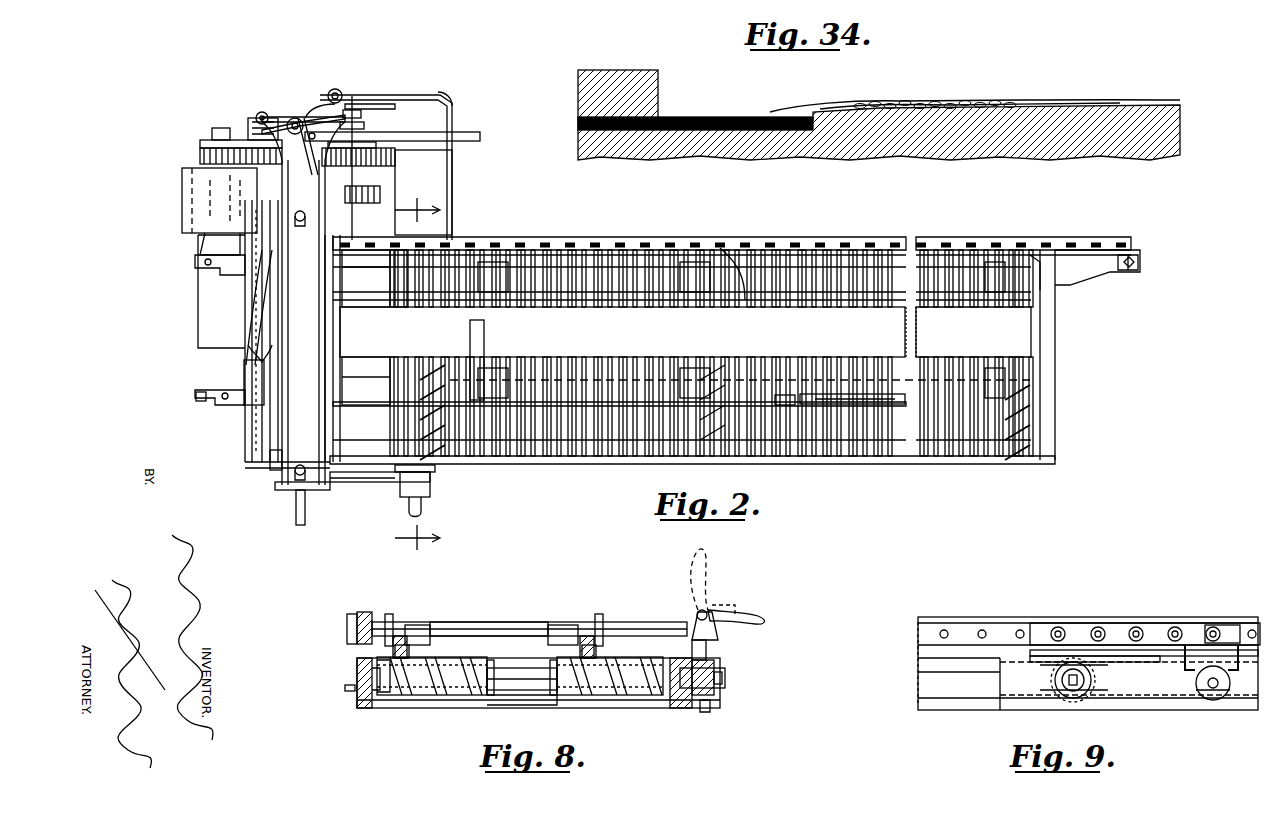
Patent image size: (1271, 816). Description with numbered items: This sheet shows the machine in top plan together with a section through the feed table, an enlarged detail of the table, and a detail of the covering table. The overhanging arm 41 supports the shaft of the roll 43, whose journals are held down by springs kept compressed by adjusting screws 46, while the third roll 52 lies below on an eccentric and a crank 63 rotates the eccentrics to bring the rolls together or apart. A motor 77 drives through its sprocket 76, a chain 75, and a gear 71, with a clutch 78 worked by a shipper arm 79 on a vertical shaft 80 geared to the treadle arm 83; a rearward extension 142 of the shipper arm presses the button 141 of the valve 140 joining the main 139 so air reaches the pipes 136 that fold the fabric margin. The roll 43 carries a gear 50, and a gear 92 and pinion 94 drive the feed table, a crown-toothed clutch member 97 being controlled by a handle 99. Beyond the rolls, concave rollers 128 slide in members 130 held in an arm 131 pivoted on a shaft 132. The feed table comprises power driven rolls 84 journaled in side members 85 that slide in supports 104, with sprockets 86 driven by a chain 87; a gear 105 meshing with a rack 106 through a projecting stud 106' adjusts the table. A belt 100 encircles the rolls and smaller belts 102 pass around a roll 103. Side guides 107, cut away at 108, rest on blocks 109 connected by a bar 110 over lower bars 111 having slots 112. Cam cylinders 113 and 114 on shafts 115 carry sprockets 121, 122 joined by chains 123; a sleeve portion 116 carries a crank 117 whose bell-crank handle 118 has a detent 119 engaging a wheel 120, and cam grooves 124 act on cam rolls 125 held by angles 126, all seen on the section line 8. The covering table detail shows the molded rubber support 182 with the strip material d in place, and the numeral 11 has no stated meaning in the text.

In FIG. 2, the overhanging arm 41 is at (303, 303).
In FIG. 2, the adjusting screws 46 is at (301, 345).
In FIG. 2, the crank 63 is at (298, 495).
In FIG. 2, the roll 43 is at (272, 466).
In FIG. 2, the third roll 52 is at (258, 440).
In FIG. 2, the concave rollers 128 is at (268, 405).
In FIG. 2, the pipes 136 is at (262, 372).
In FIG. 2, the arm 131 is at (215, 312).
In FIG. 2, the members 130 is at (238, 405).
In FIG. 2, the shaft 132 is at (205, 252).
In FIG. 2, the motor 77 is at (180, 200).
In FIG. 2, the sprocket 76 is at (215, 148).
In FIG. 2, the gear 71 is at (208, 160).
In FIG. 2, the chain 75 is at (252, 128).
In FIG. 2, the clutch 78 is at (262, 112).
In FIG. 2, the shipper arm 79 is at (288, 120).
In FIG. 2, the vertical shaft 80 is at (312, 112).
In FIG. 2, the rearward extension 142 is at (325, 100).
In FIG. 2, the valve 140 is at (342, 90).
In FIG. 2, the button 141 is at (348, 100).
In FIG. 2, the crown-toothed clutch member 97 is at (412, 95).
In FIG. 2, the main 139 is at (445, 93).
In FIG. 2, the handle 99 is at (468, 135).
In FIG. 2, the shaft 11 is at (362, 107).
In FIG. 2, the gear 92 is at (396, 158).
In FIG. 2, the pinion 94 is at (382, 194).
In FIG. 2, the section line 8 is at (409, 375).
In FIG. 2, the treadle arm 83 is at (372, 484).
In FIG. 2, the crank handle 118 is at (424, 505).
In FIG. 8, the crank handle 118 is at (745, 614).
In FIG. 2, the gear 50 is at (728, 349).
In FIG. 2, the supports 104 is at (955, 244).
In FIG. 8, the supports 104 is at (358, 702).
In FIG. 9, the supports 104 is at (945, 702).
In FIG. 2, the belt 100 is at (685, 332).
In FIG. 8, the belt 100 is at (478, 624).
In FIG. 2, the smaller belts 102 is at (355, 278).
In FIG. 2, the roll 103 is at (382, 300).
In FIG. 2, the shafts 115 is at (428, 365).
In FIG. 8, the shafts 115 is at (518, 690).
In FIG. 9, the shafts 115 is at (1213, 700).
In FIG. 2, the blocks 109 is at (492, 248).
In FIG. 8, the blocks 109 is at (418, 626).
In FIG. 2, the bar 110 is at (540, 262).
In FIG. 8, the bar 110 is at (400, 638).
In FIG. 9, the bar 110 is at (1015, 645).
In FIG. 2, the side guides 107 is at (600, 268).
In FIG. 8, the side guides 107 is at (390, 615).
In FIG. 9, the side guides 107 is at (1075, 626).
In FIG. 2, the chain 87 is at (725, 255).
In FIG. 8, the chain 87 is at (345, 615).
In FIG. 9, the chain 87 is at (1175, 700).
In FIG. 2, the cam cylinders 113 is at (740, 272).
In FIG. 8, the cam cylinders 113 is at (432, 692).
In FIG. 2, the power driven rolls 84 is at (860, 275).
In FIG. 8, the power driven rolls 84 is at (445, 624).
In FIG. 9, the power driven rolls 84 is at (1100, 630).
In FIG. 2, the side members 85 is at (982, 258).
In FIG. 8, the side members 85 is at (356, 660).
In FIG. 9, the side members 85 is at (998, 625).
In FIG. 2, the cam cylinders 114 is at (452, 432).
In FIG. 8, the cam cylinders 114 is at (622, 692).
In FIG. 9, the cam cylinders 114 is at (1232, 700).
In FIG. 2, the cam grooves 124 is at (524, 432).
In FIG. 8, the cam grooves 124 is at (405, 685).
In FIG. 2, the bars 111 is at (790, 420).
In FIG. 8, the bars 111 is at (412, 650).
In FIG. 9, the bars 111 is at (1210, 640).
In FIG. 2, the slots 112 is at (876, 412).
In FIG. 8, the sprockets 86 is at (355, 632).
In FIG. 8, the sprockets 121 is at (492, 680).
In FIG. 8, the sprockets 122 is at (548, 690).
In FIG. 8, the chains 123 is at (545, 668).
In FIG. 9, the chains 123 is at (1085, 685).
In FIG. 8, the cam rolls 125 is at (395, 690).
In FIG. 9, the cam rolls 125 is at (1218, 652).
In FIG. 8, the sleeve portion 116 is at (694, 708).
In FIG. 8, the wheel 120 is at (716, 705).
In FIG. 8, the detent 119 is at (714, 676).
In FIG. 8, the crank 117 is at (708, 635).
In FIG. 9, the cut-away 108 is at (1052, 630).
In FIG. 9, the rack 106 is at (1031, 700).
In FIG. 9, the projecting stud 106' is at (1071, 703).
In FIG. 9, the gear 105 is at (1105, 688).
In FIG. 9, the angles 126 is at (1190, 672).
In FIG. 34, the molded rubber support 182 is at (1065, 130).
In FIG. 34, the strip material d is at (845, 110).